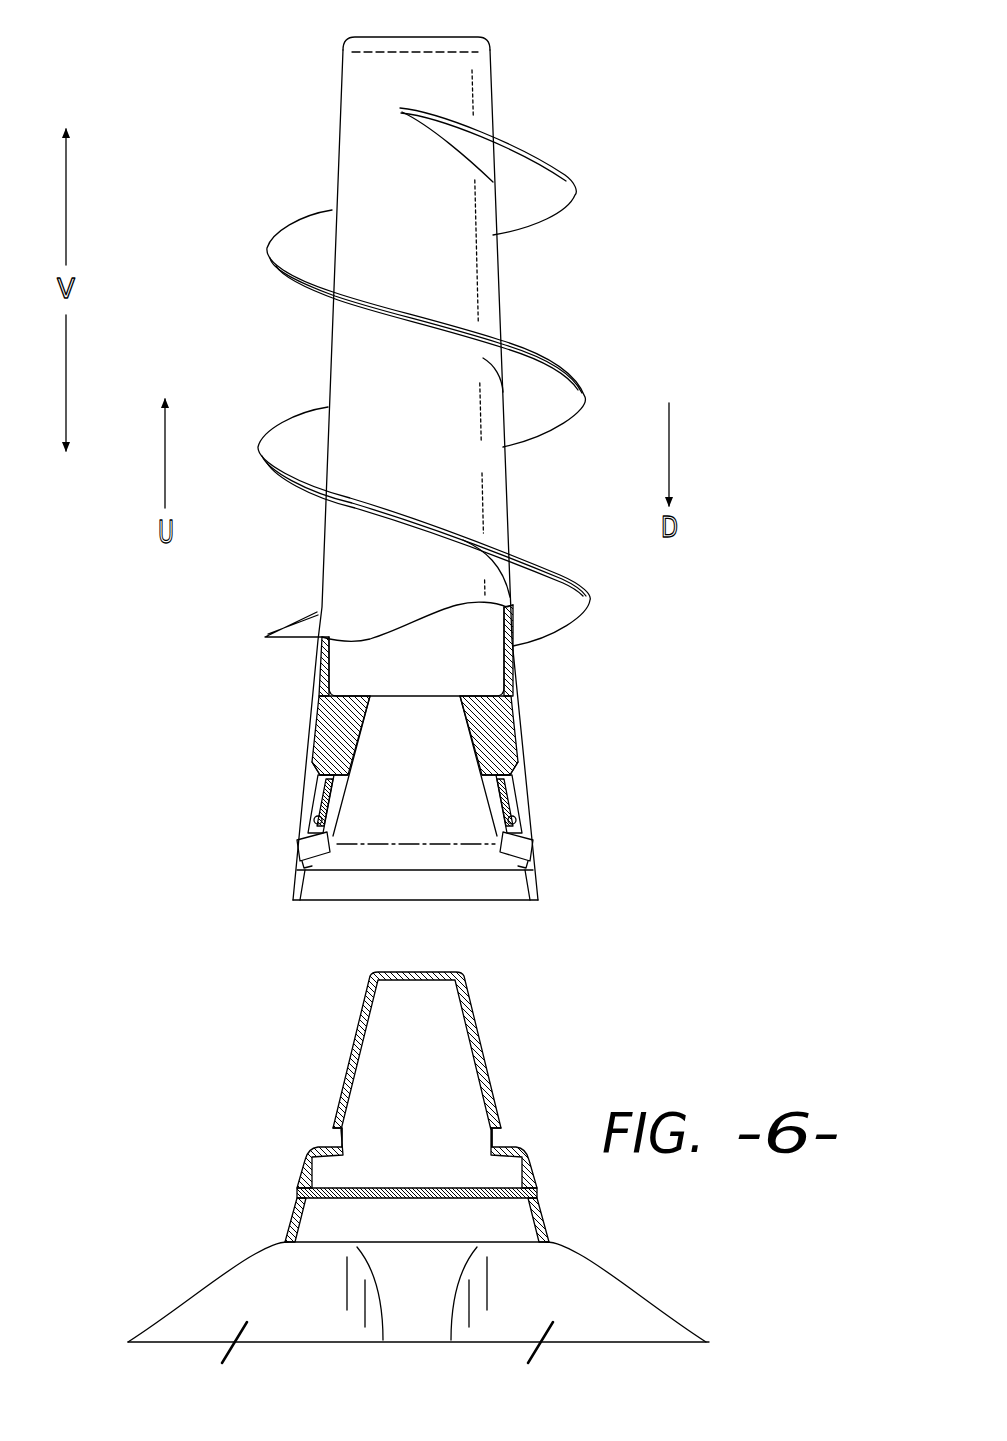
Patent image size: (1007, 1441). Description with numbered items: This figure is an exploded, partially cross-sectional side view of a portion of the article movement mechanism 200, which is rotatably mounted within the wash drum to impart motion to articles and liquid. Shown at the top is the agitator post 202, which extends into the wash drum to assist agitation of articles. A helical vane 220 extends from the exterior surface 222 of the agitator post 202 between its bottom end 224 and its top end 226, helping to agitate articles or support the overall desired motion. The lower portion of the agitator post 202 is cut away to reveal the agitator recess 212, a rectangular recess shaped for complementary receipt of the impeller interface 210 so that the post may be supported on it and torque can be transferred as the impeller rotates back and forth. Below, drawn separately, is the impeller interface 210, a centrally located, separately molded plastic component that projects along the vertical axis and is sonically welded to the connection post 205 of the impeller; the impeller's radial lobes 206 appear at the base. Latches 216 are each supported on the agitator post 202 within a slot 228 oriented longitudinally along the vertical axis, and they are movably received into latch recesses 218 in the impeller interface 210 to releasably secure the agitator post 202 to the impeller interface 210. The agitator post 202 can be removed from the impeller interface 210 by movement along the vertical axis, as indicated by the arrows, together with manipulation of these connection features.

The article movement mechanism 200 is at (610, 134).
The agitator post 202 is at (357, 80).
The top end 226 is at (515, 65).
The exterior surface 222 is at (502, 297).
The helical vane 220 is at (543, 417).
The bottom end 224 is at (550, 726).
The slot 228 is at (308, 762).
The latch 216 is at (308, 838).
The agitator recess 212 is at (407, 815).
The impeller interface 210 is at (443, 1106).
The latch recess 218 is at (326, 1139).
The connection post 205 is at (551, 1231).
The radial lobe 206 is at (611, 1299).